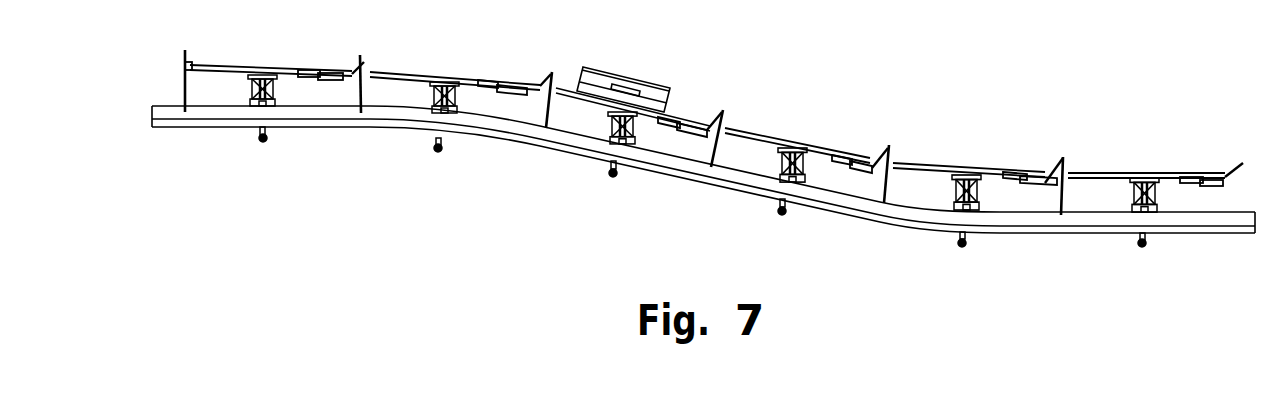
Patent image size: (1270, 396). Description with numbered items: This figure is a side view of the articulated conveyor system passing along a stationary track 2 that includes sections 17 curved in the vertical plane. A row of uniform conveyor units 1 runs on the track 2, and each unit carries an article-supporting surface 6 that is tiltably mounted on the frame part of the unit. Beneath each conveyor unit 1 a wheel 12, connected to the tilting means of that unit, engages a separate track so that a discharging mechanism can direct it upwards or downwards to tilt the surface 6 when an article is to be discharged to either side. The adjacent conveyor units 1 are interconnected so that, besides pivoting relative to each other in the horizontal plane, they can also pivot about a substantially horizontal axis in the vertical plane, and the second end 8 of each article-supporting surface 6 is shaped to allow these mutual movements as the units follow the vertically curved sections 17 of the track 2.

The conveyor unit 1 is at (714, 108).
The stationary track 2 is at (147, 125).
The article-supporting surface 6 is at (441, 70).
The second end of the supporting surface 8 is at (507, 76).
The wheel 12 is at (1140, 257).
The track sections curved in the vertical plane 17 is at (503, 128).